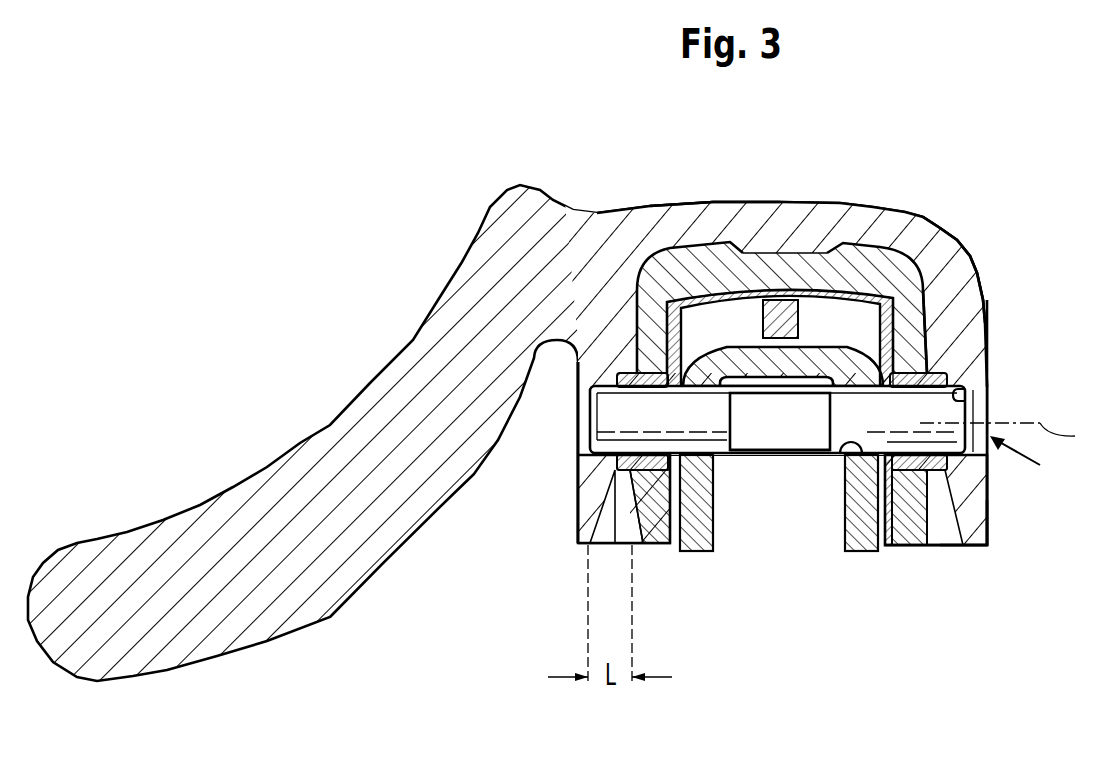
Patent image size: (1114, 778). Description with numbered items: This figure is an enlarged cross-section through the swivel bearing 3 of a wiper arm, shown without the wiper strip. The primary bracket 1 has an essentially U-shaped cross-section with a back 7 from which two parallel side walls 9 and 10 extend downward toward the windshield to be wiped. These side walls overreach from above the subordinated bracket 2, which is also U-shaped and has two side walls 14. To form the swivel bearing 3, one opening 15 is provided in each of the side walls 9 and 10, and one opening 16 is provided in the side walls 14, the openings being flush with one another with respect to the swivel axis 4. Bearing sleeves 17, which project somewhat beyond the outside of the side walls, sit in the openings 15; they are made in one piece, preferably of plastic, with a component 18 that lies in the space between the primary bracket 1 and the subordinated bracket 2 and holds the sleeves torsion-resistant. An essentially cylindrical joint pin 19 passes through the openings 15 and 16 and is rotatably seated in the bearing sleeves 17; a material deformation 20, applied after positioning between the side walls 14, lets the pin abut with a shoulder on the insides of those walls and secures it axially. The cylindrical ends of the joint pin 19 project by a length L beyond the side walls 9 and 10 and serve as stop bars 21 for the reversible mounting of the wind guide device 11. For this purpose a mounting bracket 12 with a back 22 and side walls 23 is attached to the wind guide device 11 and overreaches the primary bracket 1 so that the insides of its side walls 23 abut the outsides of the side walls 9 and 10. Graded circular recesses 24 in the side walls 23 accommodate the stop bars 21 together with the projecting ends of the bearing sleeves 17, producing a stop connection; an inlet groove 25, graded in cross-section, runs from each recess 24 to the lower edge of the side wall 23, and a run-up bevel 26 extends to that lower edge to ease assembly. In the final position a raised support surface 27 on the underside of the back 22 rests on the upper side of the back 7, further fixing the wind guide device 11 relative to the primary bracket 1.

The primary bracket 1 is at (660, 293).
The subordinated bracket 2 is at (702, 475).
The swivel bearing 3 is at (1022, 459).
The swivel axis 4 is at (1004, 436).
The back 7 is at (838, 267).
The side wall 9 is at (647, 330).
The side wall 10 is at (972, 265).
The wind guide device 11 is at (283, 487).
The mounting bracket 12 is at (917, 230).
The side walls 14 is at (687, 557).
The opening 15 is at (953, 333).
The opening 16 is at (840, 455).
The bearing sleeve 17 is at (642, 553).
The component 18 is at (747, 297).
The joint pin 19 is at (722, 430).
The material deformation 20 is at (783, 440).
The stop bars 21 is at (578, 430).
The back 22 is at (727, 207).
The side walls 23 is at (612, 345).
The recesses 24 is at (578, 392).
The inlet groove 25 is at (937, 527).
The run-up bevel 26 is at (957, 533).
The support surface 27 is at (790, 258).